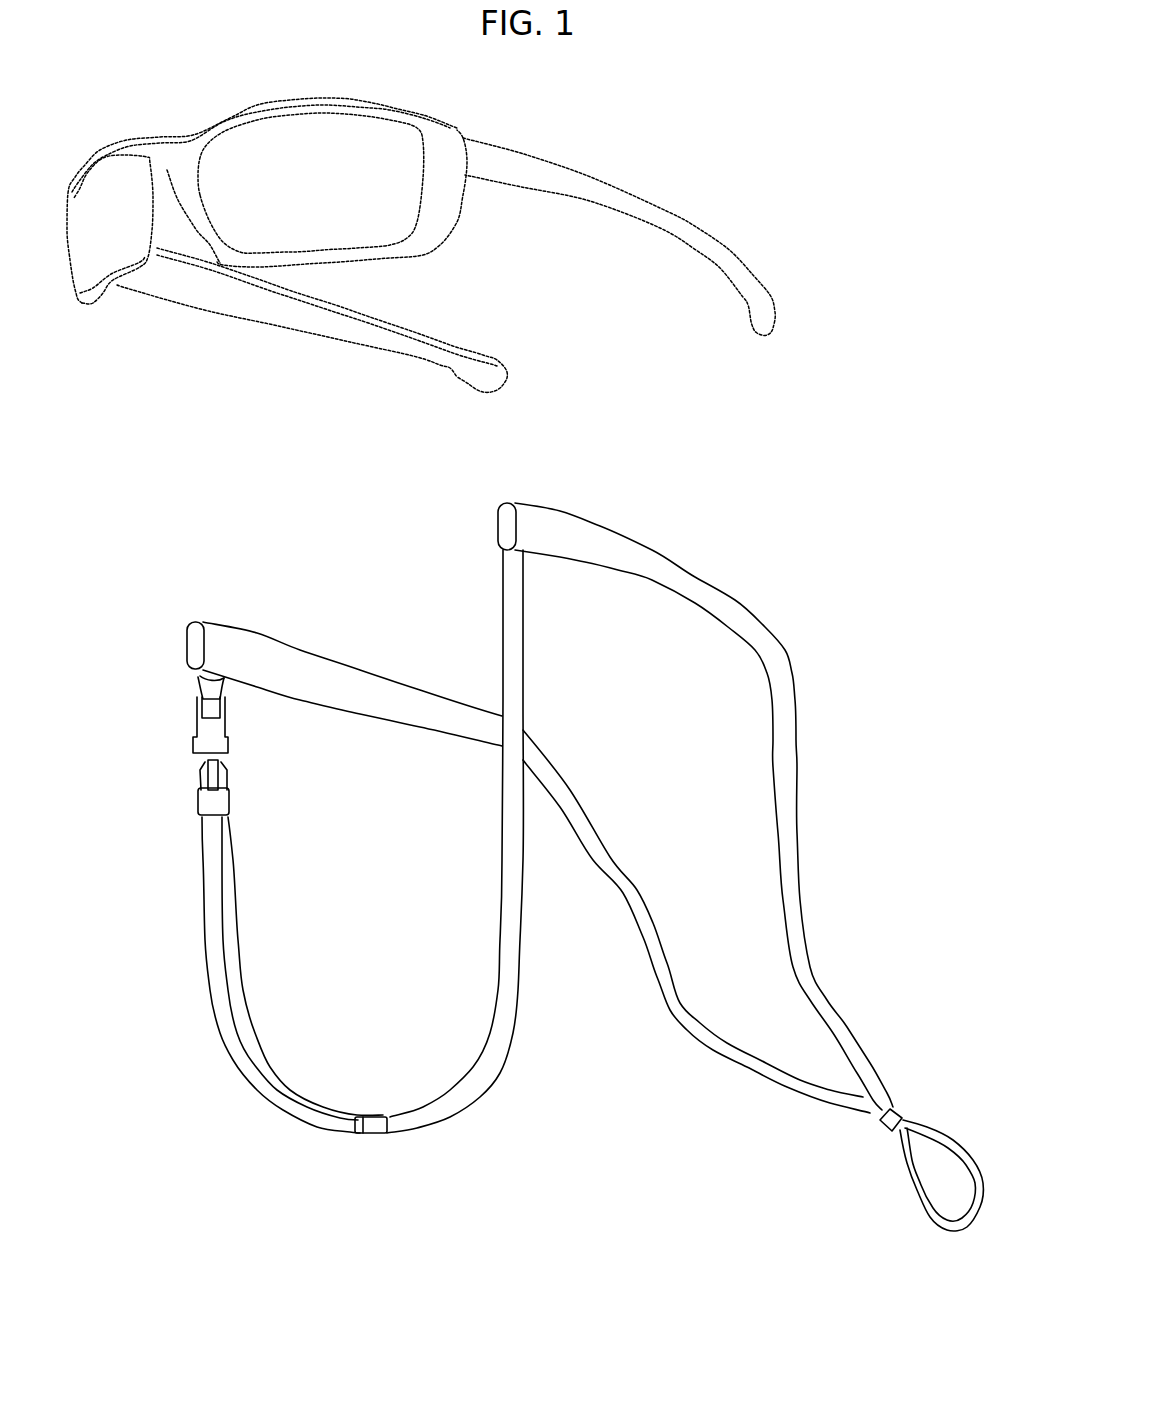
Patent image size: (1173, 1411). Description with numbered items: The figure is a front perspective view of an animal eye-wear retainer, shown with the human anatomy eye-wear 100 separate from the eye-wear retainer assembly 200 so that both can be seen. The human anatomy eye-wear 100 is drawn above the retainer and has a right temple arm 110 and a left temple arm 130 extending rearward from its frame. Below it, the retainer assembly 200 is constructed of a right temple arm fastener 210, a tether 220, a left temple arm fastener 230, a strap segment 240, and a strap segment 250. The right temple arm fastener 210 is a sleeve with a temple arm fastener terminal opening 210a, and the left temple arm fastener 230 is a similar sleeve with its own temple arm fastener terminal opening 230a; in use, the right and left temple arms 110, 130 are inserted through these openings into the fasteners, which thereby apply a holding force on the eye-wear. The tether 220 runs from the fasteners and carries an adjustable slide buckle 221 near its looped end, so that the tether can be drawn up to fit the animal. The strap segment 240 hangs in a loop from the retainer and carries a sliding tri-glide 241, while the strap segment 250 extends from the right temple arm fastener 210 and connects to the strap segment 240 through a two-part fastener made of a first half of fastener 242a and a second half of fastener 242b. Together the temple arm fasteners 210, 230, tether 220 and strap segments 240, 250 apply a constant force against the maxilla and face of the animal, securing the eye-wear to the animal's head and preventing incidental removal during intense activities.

The human anatomy eye-wear 100 is at (428, 229).
The human anatomy eye-wear right temple arm 110 is at (383, 337).
The human anatomy eye-wear left temple arm 130 is at (650, 210).
The eye-wear retainer assembly 200 is at (525, 821).
The right temple arm fastener 210 is at (285, 624).
The temple arm fastener terminal opening 210a is at (195, 640).
The tether 220 is at (788, 847).
The adjustable slide buckle 221 is at (880, 1123).
The left temple arm fastener 230 is at (606, 751).
The temple arm fastener terminal opening 230a is at (505, 530).
The strap segment 240 is at (208, 877).
The sliding tri-glide 241 is at (355, 1133).
The first half of fastener 242a is at (207, 785).
The second half of fastener 242b is at (207, 740).
The strap segment 250 is at (207, 692).